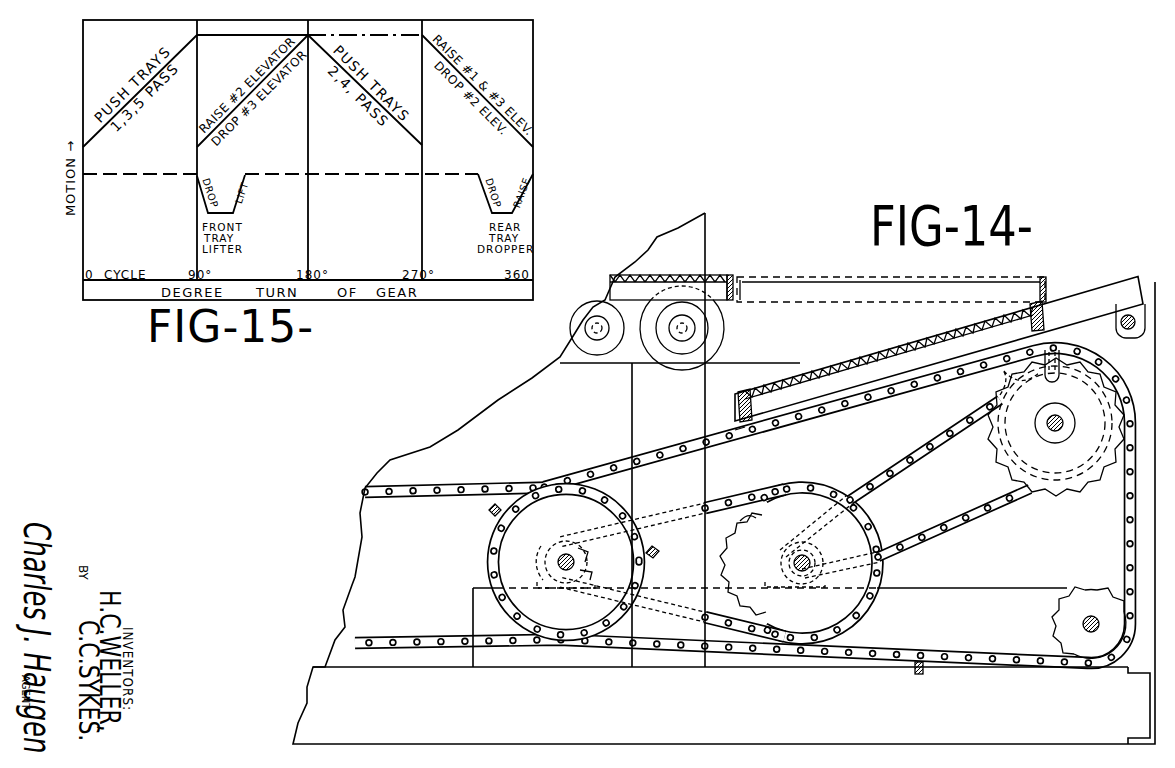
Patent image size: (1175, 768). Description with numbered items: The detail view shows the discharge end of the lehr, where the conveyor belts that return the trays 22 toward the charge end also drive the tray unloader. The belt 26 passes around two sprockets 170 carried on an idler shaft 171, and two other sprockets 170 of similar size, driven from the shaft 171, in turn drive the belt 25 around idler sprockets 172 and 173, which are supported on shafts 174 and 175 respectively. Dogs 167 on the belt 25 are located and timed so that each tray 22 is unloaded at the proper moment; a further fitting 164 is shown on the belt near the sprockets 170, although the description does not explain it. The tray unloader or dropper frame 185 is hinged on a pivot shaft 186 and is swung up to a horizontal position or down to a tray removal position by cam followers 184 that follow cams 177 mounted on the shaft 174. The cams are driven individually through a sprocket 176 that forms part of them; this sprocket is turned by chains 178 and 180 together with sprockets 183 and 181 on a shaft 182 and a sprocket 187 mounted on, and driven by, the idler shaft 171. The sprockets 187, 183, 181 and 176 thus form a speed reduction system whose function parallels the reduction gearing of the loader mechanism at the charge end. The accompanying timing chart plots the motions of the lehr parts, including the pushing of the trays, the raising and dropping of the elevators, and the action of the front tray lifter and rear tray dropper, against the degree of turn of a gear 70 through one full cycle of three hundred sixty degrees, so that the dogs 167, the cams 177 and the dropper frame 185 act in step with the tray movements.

In FIG. 14, the tray 22 is at (904, 345).
In FIG. 14, the conveyor belt 25 is at (738, 432).
In FIG. 14, the conveyor belt 26 is at (612, 503).
In FIG. 15, the gear 70 is at (456, 292).
In FIG. 14, the chain bracket 164 is at (654, 552).
In FIG. 14, the dog 167 is at (489, 511).
In FIG. 14, the sprocket 170 is at (490, 559).
In FIG. 14, the idler shaft 171 is at (571, 574).
In FIG. 14, the idler sprocket 172 is at (1078, 497).
In FIG. 14, the idler sprocket 173 is at (1073, 605).
In FIG. 14, the shaft 174 is at (1060, 428).
In FIG. 14, the shaft 175 is at (1083, 624).
In FIG. 14, the sprocket 176 is at (1021, 431).
In FIG. 14, the cam 177 is at (1000, 425).
In FIG. 14, the chain 178 is at (928, 445).
In FIG. 14, the chain 180 is at (746, 490).
In FIG. 14, the sprocket 181 is at (805, 553).
In FIG. 14, the shaft 182 is at (792, 556).
In FIG. 14, the sprocket 183 is at (743, 522).
In FIG. 14, the cam follower 184 is at (1043, 348).
In FIG. 14, the tray unloader or dropper frame 185 is at (1095, 281).
In FIG. 14, the pivot shaft 186 is at (1130, 335).
In FIG. 14, the sprocket 187 is at (582, 560).